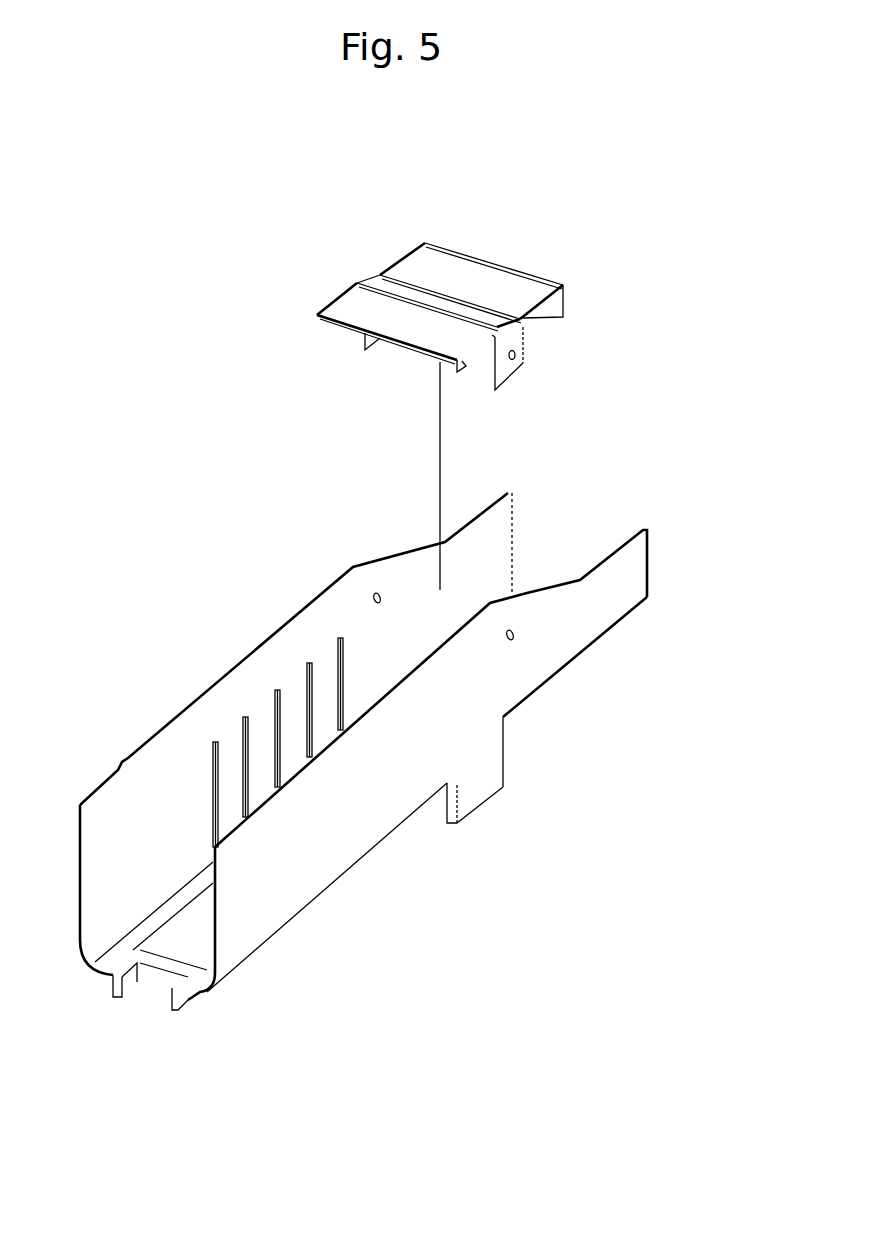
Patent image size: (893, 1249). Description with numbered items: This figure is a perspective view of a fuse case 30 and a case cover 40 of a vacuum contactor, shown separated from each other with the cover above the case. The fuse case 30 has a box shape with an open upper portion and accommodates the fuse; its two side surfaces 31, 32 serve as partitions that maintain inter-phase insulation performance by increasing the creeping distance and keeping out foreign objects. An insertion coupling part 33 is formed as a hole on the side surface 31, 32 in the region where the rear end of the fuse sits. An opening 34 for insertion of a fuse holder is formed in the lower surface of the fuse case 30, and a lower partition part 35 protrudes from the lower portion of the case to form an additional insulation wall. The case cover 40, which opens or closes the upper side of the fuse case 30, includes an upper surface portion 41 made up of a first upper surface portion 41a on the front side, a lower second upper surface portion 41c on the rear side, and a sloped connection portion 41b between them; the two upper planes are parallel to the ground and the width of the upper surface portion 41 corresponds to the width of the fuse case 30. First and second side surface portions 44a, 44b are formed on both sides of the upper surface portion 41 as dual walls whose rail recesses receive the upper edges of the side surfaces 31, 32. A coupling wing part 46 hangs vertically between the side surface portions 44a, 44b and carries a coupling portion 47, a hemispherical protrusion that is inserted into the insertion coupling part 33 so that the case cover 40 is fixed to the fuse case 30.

The fuse case 30 is at (669, 538).
The side surface 31 is at (517, 695).
The side surface 32 is at (327, 605).
The insertion coupling part 33 is at (518, 637).
The opening 34 is at (187, 948).
The lower partition part 35 is at (483, 793).
The case cover 40 is at (580, 258).
The upper surface portion 41 is at (420, 284).
The first upper surface portion 41a is at (337, 295).
The connection portion 41b is at (370, 275).
The second upper surface portion 41c is at (403, 257).
The first side surface portion 44a is at (459, 364).
The second side surface portion 44b is at (551, 318).
The coupling wing part 46 is at (510, 377).
The coupling portion 47 is at (516, 357).